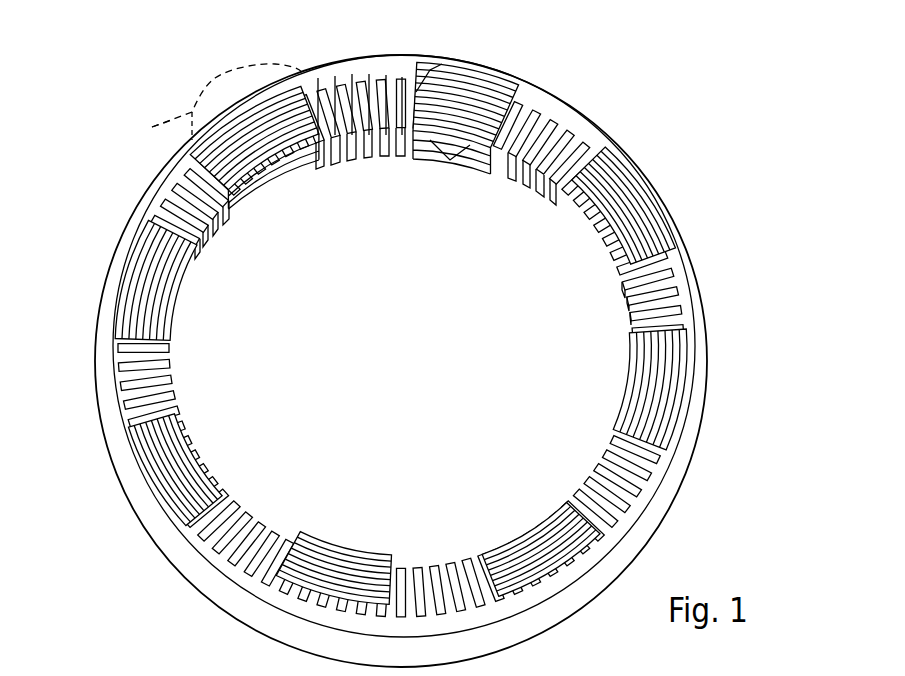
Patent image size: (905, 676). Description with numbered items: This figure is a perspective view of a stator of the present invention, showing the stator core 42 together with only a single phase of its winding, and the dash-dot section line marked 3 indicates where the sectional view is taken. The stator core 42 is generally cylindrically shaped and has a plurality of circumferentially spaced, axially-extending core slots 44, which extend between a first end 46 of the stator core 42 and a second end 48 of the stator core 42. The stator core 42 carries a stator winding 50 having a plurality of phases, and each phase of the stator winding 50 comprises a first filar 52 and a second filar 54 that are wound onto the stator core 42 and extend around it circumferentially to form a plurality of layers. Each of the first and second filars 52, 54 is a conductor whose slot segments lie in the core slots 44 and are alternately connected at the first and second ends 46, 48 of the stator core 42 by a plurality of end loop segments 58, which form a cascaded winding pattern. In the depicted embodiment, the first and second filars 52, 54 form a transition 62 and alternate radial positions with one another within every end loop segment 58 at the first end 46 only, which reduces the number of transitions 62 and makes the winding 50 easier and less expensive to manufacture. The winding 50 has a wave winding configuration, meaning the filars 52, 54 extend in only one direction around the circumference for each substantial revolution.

The stator core 42 is at (589, 119).
The core slots 44 is at (627, 318).
The first end 46 is at (342, 75).
The second end 48 is at (455, 160).
The stator winding 50 is at (373, 565).
The first filar 52 is at (512, 80).
The second filar 54 is at (432, 62).
The end loop segments 58 is at (646, 194).
The transition 62 is at (218, 82).
The section view indicator 3 is at (150, 135).